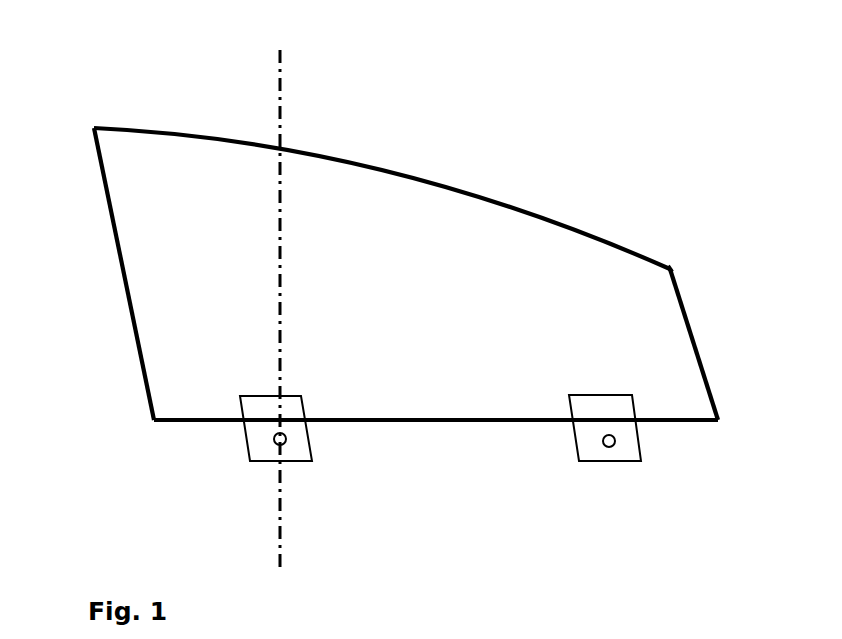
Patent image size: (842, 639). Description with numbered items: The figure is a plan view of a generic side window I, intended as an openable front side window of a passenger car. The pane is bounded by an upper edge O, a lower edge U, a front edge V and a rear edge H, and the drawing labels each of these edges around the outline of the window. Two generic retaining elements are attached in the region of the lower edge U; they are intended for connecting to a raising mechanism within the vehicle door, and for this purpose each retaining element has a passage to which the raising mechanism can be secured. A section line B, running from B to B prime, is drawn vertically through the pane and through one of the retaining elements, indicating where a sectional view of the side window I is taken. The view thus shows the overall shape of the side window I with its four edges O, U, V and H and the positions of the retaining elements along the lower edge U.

The upper edge of the side window O is at (382, 160).
The lower edge of the side window U is at (447, 446).
The rear edge of the side window H is at (100, 272).
The front edge of the side window V is at (722, 324).
The side window of a vehicle I is at (652, 282).
The section line B-B' B is at (286, 319).